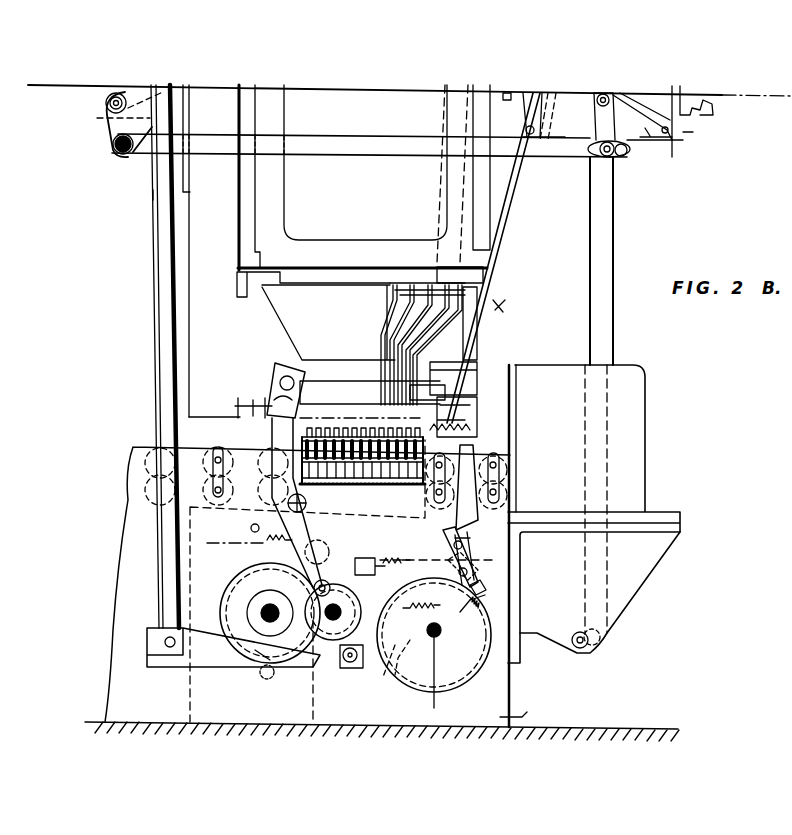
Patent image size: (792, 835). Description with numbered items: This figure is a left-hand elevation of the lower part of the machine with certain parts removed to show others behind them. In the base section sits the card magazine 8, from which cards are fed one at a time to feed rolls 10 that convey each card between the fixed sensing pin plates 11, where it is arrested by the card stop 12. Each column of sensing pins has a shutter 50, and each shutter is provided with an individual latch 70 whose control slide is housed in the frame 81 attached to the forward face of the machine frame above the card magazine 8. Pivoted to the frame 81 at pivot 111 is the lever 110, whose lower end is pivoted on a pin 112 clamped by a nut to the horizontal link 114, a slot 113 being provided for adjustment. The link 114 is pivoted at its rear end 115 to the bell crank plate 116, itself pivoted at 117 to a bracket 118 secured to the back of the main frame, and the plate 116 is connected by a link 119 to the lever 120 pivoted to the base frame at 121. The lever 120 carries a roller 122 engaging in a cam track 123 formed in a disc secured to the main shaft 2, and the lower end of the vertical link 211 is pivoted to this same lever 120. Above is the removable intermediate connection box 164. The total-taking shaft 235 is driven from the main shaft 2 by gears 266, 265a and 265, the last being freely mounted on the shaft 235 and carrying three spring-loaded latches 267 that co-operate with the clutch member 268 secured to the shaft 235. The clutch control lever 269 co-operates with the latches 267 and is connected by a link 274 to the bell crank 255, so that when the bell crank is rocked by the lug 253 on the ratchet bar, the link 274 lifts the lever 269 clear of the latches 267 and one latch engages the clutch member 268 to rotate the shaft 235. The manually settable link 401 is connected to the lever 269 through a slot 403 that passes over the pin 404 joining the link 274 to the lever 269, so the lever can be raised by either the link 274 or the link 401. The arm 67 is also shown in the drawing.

The main shaft 2 is at (262, 611).
The card magazine 8 is at (633, 400).
The feed rolls 10 is at (476, 520).
The sensing pin plates 11 is at (345, 486).
The card stop 12 is at (300, 483).
The shutter 50 is at (351, 406).
The pivot arm 67 is at (328, 578).
The latch 70 is at (470, 422).
The frame 81 is at (702, 134).
The lever 110 is at (620, 125).
The pivot 111 is at (643, 142).
The pin 112 is at (613, 172).
The slot 113 is at (620, 152).
The horizontal link 114 is at (320, 145).
The rear end pivot 115 is at (117, 146).
The bell crank plate 116 is at (118, 128).
The pivot 117 is at (106, 104).
The bracket 118 is at (110, 122).
The link 119 is at (152, 193).
The lever 120 is at (157, 648).
The pivot 121 is at (345, 668).
The roller 122 is at (262, 662).
The cam track 123 is at (248, 662).
The intermediate connection box 164 is at (331, 110).
The vertical link 211 is at (164, 215).
The total-taking shaft 235 is at (436, 682).
The lug 253 is at (535, 150).
The bell crank 255 is at (548, 138).
The gear 265 is at (470, 680).
The gear 265a is at (372, 557).
The gear 266 is at (307, 581).
The spring-loaded latches 267 is at (383, 680).
The clutch member 268 is at (403, 678).
The clutch control lever 269 is at (480, 582).
The link 274 is at (533, 160).
The manually settable link 401 is at (453, 538).
The slot 403 is at (470, 567).
The pin 404 is at (483, 597).